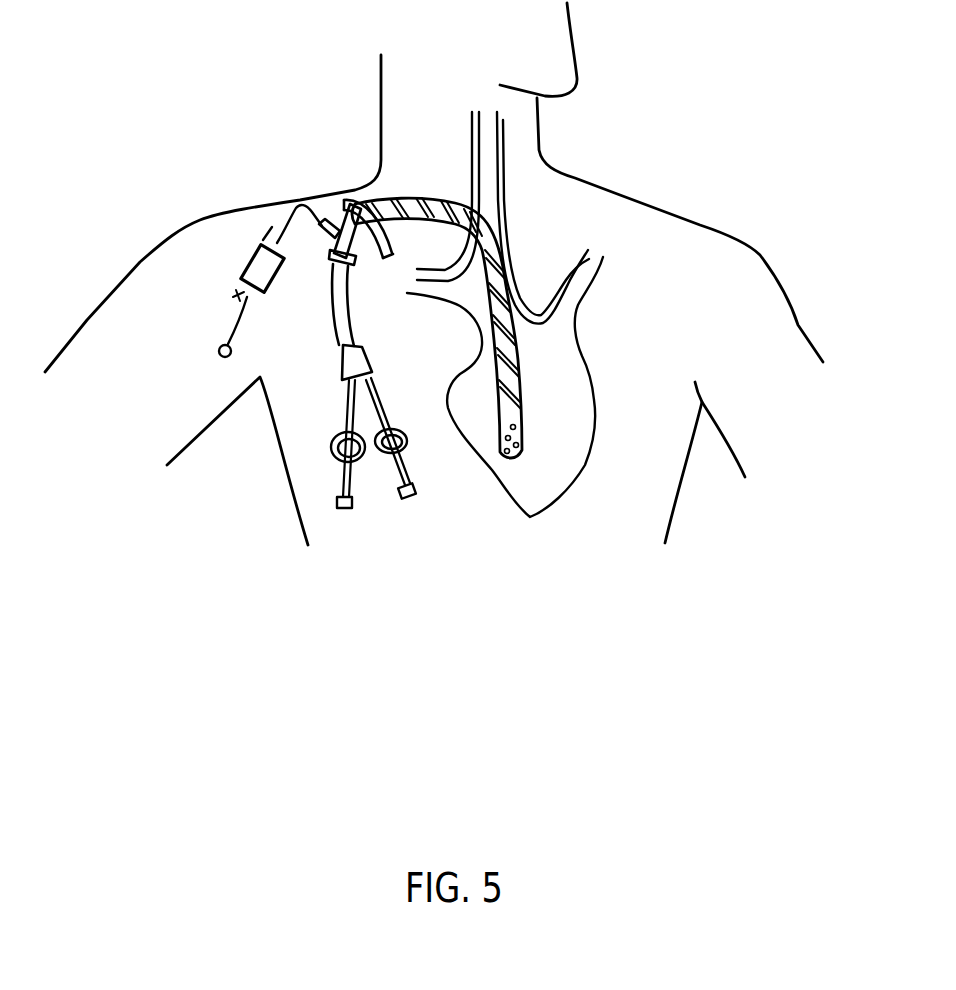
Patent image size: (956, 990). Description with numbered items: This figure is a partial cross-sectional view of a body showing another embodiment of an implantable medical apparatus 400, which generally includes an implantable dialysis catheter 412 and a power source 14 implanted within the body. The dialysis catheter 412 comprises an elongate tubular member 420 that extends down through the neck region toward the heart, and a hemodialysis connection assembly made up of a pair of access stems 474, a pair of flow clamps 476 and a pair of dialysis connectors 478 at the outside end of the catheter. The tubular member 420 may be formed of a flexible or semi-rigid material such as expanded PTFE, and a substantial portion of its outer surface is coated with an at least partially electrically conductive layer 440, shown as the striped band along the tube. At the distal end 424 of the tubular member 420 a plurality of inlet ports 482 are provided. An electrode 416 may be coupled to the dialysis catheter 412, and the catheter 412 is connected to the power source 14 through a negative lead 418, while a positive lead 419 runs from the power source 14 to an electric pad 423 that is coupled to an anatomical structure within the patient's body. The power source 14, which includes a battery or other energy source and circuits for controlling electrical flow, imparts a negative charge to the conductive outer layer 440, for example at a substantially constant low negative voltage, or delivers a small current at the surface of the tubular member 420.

The power source 14 is at (248, 258).
The implantable medical apparatus 400 is at (312, 150).
The implantable dialysis catheter 412 is at (385, 278).
The electrode 416 is at (333, 217).
The negative lead 418 is at (298, 205).
The positive lead 419 is at (238, 327).
The elongate tubular member 420 is at (337, 333).
The electric pad 423 is at (219, 356).
The distal end 424 is at (527, 395).
The electrically conductive layer 440 is at (402, 200).
The access stems 474 is at (350, 480).
The flow clamps 476 is at (397, 427).
The dialysis connectors 478 is at (340, 506).
The inlet ports 482 is at (520, 455).